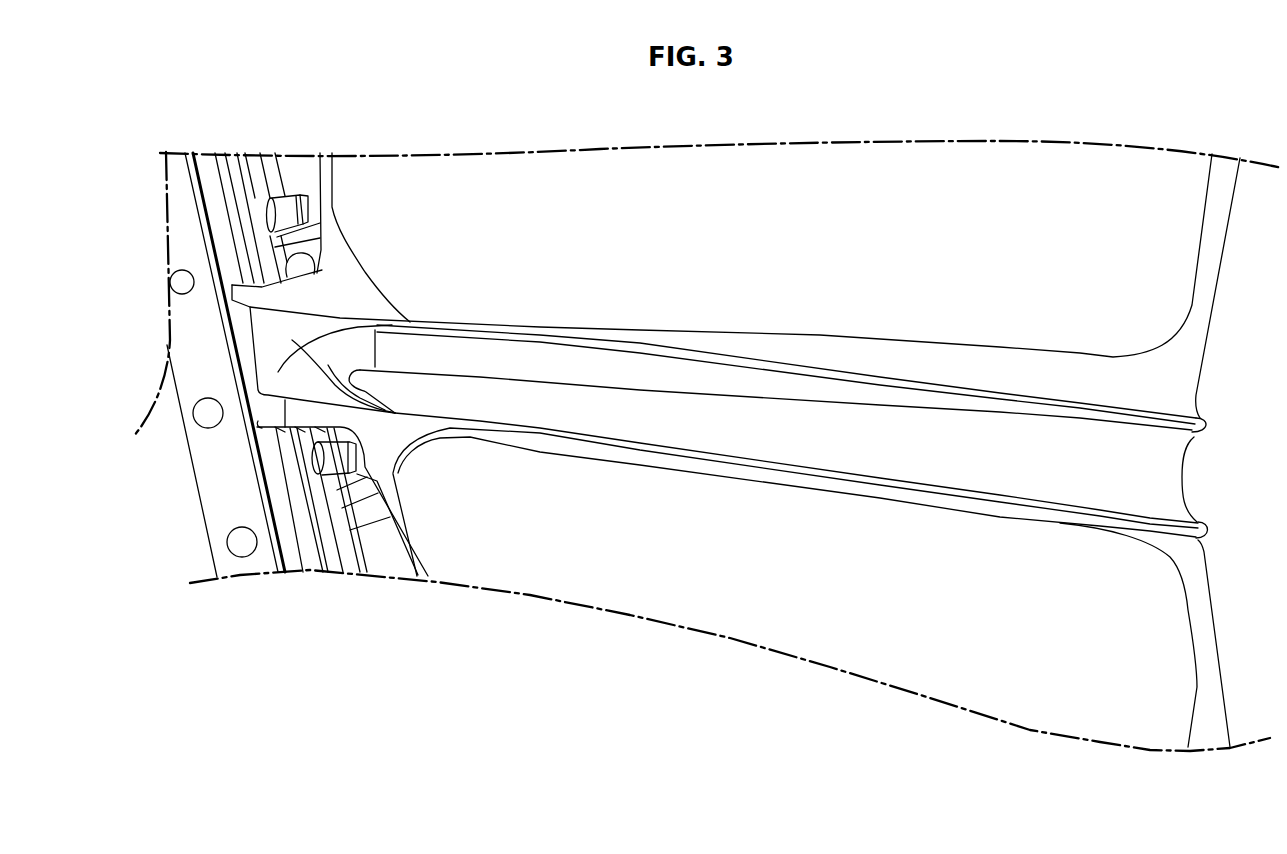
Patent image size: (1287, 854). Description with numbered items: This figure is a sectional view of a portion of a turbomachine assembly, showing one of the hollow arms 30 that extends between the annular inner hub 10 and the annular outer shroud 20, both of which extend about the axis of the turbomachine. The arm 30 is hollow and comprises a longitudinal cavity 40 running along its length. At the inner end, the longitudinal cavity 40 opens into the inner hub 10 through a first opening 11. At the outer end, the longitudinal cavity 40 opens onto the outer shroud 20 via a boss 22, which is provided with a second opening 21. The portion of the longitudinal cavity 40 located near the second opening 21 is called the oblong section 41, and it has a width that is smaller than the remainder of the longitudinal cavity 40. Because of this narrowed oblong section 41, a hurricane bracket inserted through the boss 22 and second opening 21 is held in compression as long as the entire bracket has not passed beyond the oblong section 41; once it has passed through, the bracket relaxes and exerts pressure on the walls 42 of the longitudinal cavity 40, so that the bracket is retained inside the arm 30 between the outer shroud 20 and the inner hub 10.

The inner hub 10 is at (1207, 688).
The first opening 11 is at (1158, 478).
The outer shroud 20 is at (212, 190).
The second opening 21 is at (266, 340).
The boss 22 is at (323, 289).
The arm 30 is at (680, 453).
The longitudinal cavity 40 is at (682, 413).
The oblong section 41 is at (375, 327).
The walls 42 is at (558, 367).